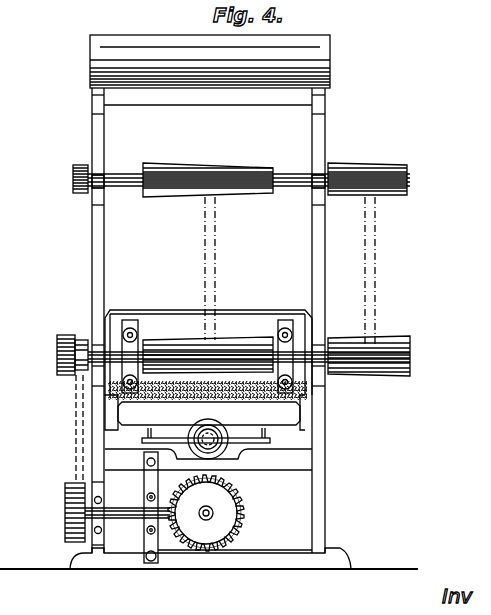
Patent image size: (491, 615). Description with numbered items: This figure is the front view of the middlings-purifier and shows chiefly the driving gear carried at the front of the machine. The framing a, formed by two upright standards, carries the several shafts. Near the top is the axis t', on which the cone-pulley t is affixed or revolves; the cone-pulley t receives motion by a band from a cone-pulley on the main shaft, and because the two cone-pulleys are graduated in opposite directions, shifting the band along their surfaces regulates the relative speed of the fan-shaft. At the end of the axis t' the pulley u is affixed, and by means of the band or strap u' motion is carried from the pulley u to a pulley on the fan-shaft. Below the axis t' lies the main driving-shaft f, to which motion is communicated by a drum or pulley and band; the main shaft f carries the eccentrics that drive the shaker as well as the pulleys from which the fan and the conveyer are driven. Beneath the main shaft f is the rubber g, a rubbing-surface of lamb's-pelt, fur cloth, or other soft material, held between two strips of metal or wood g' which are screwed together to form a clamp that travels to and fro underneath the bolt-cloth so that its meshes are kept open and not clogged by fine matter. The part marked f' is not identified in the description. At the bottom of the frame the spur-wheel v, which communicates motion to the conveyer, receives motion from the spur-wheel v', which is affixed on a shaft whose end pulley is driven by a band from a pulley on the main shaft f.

The framing a is at (208, 320).
The pulley u is at (74, 177).
The band or strap u' is at (242, 212).
The cone-pulley t is at (208, 180).
The axis t' is at (208, 177).
The rubbing-surface g is at (257, 281).
The strips of metal or wood g' is at (290, 271).
The main driving-shaft f is at (276, 356).
The bearing plates f' is at (207, 356).
The spur-wheel v is at (206, 513).
The spur-wheel v' is at (202, 513).